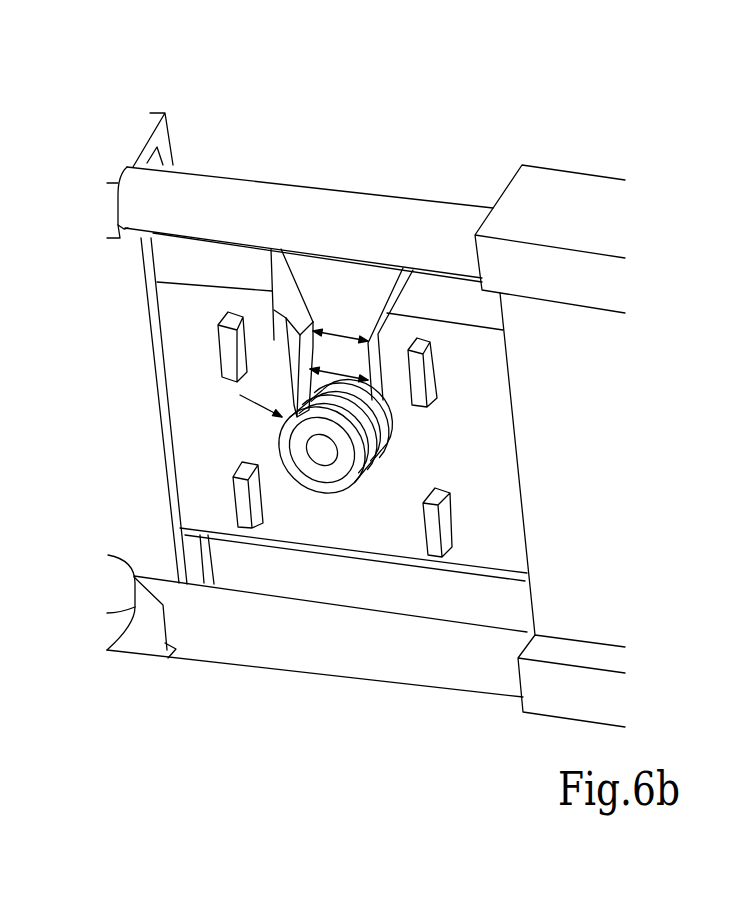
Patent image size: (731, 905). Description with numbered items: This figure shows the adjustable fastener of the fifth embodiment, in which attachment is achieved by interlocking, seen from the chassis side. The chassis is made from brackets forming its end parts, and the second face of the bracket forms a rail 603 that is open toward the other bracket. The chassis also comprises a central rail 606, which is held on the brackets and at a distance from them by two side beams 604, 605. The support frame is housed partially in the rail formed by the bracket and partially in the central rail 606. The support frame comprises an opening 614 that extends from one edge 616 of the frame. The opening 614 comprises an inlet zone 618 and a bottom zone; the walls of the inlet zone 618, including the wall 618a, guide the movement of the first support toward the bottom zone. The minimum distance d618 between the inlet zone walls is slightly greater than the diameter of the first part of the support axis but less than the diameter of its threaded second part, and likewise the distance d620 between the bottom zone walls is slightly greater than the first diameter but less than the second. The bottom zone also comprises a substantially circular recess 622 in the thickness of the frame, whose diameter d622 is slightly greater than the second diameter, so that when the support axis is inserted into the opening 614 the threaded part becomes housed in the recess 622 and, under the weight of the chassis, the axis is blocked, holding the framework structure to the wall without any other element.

The rail 603 is at (514, 605).
The side beam 604 is at (215, 198).
The side beam 605 is at (330, 648).
The central rail 606 is at (193, 557).
The opening 614 is at (341, 266).
The edge of the support frame 616 is at (450, 277).
The inlet zone 618 is at (313, 331).
The wall of the inlet zone 618a is at (274, 300).
The minimum distance between the inlet zone walls d618 is at (341, 338).
The distance between the bottom zone walls d620 is at (388, 413).
The recess 622 is at (391, 465).
The diameter of the recess d622 is at (387, 472).